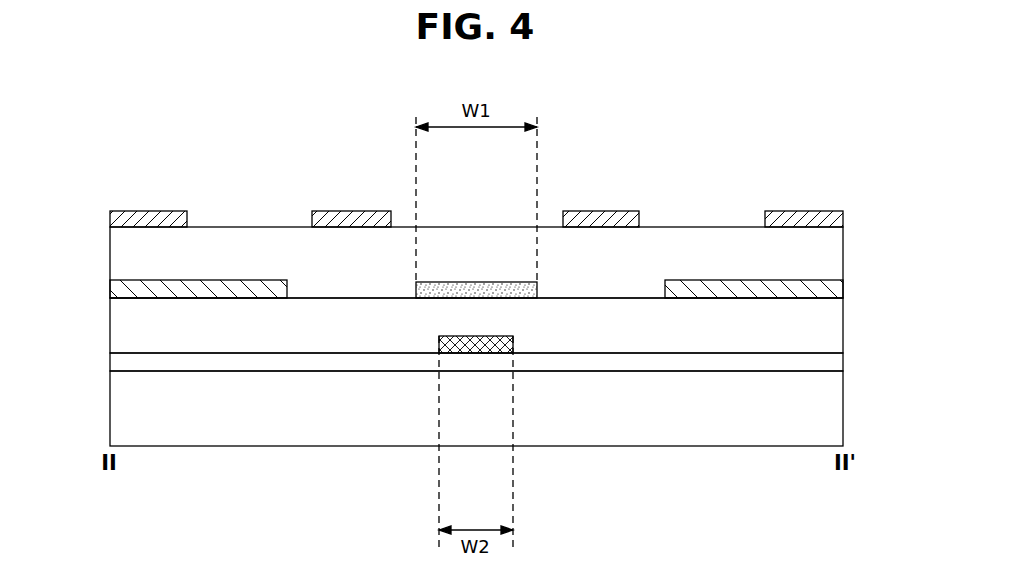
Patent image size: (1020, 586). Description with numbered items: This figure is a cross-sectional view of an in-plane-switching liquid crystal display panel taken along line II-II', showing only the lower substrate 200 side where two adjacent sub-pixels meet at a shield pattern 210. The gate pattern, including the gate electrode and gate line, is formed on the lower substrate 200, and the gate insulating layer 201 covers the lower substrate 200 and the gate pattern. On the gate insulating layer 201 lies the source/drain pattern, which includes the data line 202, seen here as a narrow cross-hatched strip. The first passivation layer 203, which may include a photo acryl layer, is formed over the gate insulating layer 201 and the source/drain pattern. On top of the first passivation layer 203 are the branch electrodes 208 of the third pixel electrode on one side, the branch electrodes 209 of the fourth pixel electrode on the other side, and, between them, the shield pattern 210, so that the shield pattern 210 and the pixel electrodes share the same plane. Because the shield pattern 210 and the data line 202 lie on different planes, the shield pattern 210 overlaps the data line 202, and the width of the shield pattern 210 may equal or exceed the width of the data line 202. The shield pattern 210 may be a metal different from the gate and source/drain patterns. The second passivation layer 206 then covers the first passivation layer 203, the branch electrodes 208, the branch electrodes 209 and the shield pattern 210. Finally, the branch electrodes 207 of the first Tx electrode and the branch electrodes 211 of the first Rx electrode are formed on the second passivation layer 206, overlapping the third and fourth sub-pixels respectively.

The lower substrate 200 is at (830, 405).
The gate insulating layer 201 is at (830, 362).
The data line 202 is at (483, 347).
The first passivation layer 203 is at (830, 325).
The second passivation layer 206 is at (830, 246).
The branch electrodes of the first Tx electrode 207 is at (338, 211).
The branch electrodes of the third pixel electrode 208 is at (118, 288).
The branch electrodes of the fourth pixel electrode 209 is at (830, 288).
The shield pattern 210 is at (478, 290).
The branch electrodes of the first Rx electrode 211 is at (792, 211).